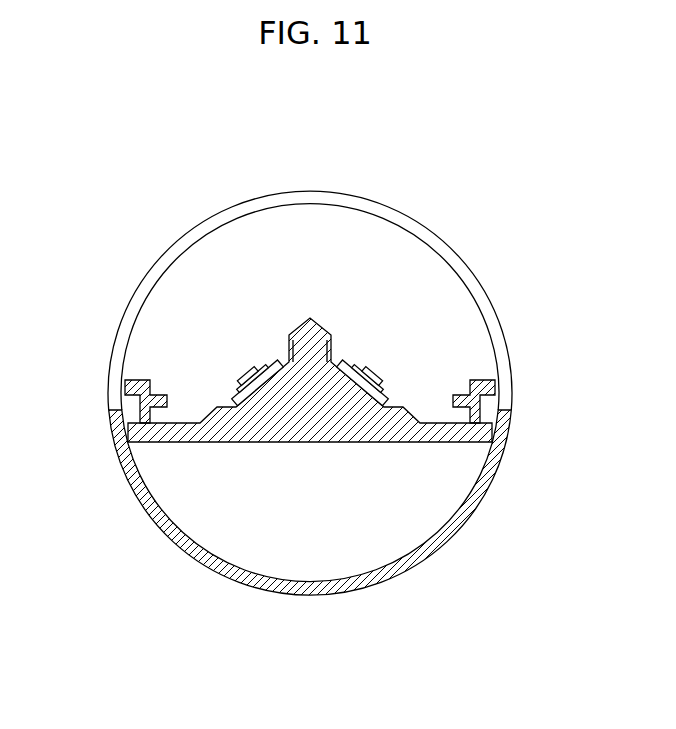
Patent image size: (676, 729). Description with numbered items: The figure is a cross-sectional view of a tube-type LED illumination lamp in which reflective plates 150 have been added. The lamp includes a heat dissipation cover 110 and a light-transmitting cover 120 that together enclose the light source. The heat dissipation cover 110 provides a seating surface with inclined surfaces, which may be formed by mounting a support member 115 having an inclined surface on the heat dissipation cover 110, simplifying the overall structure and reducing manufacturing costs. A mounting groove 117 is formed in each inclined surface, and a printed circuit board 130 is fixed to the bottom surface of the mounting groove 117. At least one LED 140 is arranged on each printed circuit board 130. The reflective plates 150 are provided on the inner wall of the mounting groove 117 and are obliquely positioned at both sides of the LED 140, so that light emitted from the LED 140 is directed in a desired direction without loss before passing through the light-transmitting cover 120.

The heat dissipation cover 110 is at (413, 566).
The support member 115 is at (278, 436).
The mounting groove 117 is at (252, 407).
The light-transmitting cover 120 is at (372, 210).
The printed circuit board 130 is at (257, 380).
The LED 140 is at (257, 367).
The reflective plates 150 is at (335, 350).